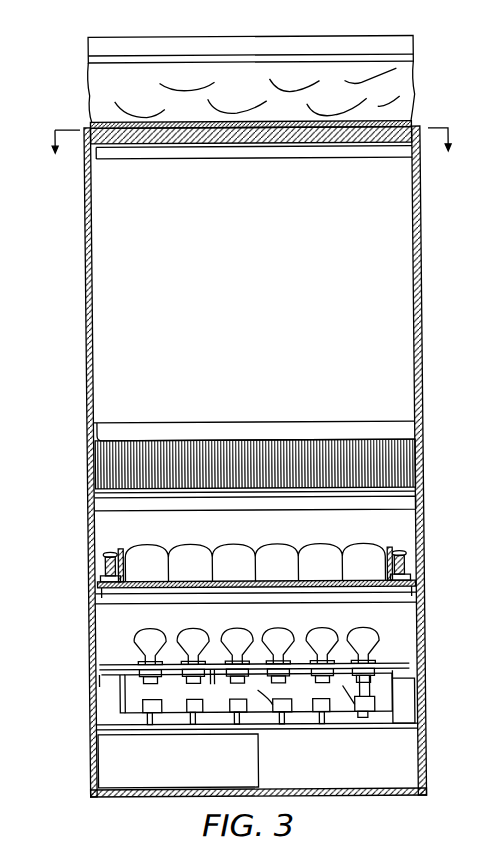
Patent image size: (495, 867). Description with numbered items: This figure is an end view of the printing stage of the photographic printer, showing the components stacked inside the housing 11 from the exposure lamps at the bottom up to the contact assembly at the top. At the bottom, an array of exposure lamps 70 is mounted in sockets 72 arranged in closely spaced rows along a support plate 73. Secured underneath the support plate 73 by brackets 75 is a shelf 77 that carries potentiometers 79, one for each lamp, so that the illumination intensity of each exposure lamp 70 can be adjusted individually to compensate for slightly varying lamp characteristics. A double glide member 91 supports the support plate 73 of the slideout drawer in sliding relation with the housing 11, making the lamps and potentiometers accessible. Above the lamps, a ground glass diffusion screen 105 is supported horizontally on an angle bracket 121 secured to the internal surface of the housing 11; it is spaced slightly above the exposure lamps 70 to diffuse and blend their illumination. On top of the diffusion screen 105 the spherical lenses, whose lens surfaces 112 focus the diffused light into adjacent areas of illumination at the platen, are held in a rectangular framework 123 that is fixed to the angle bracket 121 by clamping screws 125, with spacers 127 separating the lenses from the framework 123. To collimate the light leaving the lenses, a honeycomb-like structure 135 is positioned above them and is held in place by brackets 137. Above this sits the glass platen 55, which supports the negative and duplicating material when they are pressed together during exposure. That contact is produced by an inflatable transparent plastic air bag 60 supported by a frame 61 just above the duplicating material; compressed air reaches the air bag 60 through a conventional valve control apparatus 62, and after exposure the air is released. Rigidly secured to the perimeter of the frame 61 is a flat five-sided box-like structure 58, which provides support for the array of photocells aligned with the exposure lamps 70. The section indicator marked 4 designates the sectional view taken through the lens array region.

The housing 11 is at (88, 619).
The box-like structure 58 is at (92, 46).
The frame 61 is at (417, 59).
The inflatable transparent plastic air bag 60 is at (95, 93).
The glass platen 55 is at (415, 128).
The section line 4- 4 is at (249, 156).
The brackets 137 is at (338, 424).
The honeycomb-like structure 135 is at (142, 445).
The lens surfaces 112 is at (231, 546).
The ground glass diffusion screen 105 is at (261, 587).
The angle bracket 121 is at (103, 600).
The spacers 127 is at (125, 552).
The clamping screws 125 is at (409, 567).
The rectangular framework 123 is at (396, 548).
The exposure lamps 70 is at (341, 625).
The sockets 72 is at (163, 686).
The support plate 73 is at (213, 686).
The potentiometers 79 is at (269, 697).
The shelf 77 is at (310, 729).
The brackets 75 is at (352, 719).
The double glide member 91 is at (407, 730).
The valve control apparatus 62 is at (255, 771).